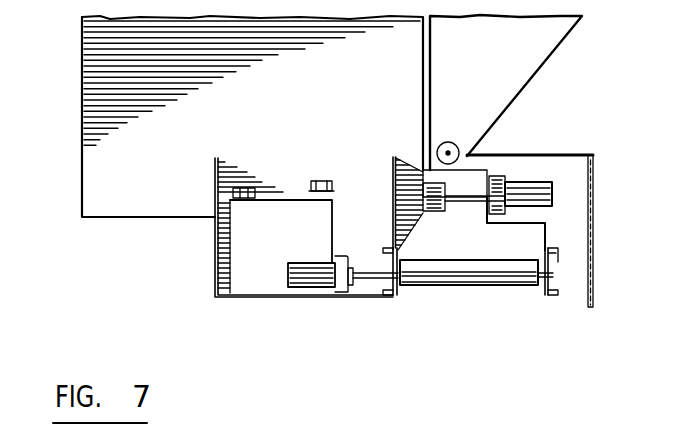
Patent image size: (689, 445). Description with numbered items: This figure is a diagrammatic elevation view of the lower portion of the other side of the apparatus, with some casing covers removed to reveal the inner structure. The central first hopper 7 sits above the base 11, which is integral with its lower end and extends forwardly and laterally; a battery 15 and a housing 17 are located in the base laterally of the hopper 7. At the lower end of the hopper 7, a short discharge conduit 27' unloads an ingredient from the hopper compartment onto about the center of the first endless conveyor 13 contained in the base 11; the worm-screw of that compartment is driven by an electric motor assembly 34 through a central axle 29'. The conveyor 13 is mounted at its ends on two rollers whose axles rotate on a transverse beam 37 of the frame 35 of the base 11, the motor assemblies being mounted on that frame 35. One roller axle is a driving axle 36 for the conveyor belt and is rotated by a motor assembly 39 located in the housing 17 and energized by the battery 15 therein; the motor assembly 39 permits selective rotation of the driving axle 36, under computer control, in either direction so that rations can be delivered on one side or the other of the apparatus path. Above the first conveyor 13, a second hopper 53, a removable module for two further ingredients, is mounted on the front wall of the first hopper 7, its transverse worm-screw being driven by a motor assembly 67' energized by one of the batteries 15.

The first hopper 7 is at (80, 108).
The base 11 is at (594, 255).
The first endless conveyor 13 is at (465, 286).
The battery 15 is at (243, 238).
The housing 17 is at (276, 176).
The discharge conduit 27' is at (438, 213).
The central axle 29' is at (464, 212).
The electric motor assembly 34 is at (556, 182).
The frame 35 is at (547, 232).
The roller driving axle 36 is at (365, 279).
The transverse beam 37 is at (397, 293).
The motor assembly 39 is at (313, 267).
The second hopper 53 is at (529, 83).
The motor assembly 67' is at (499, 134).